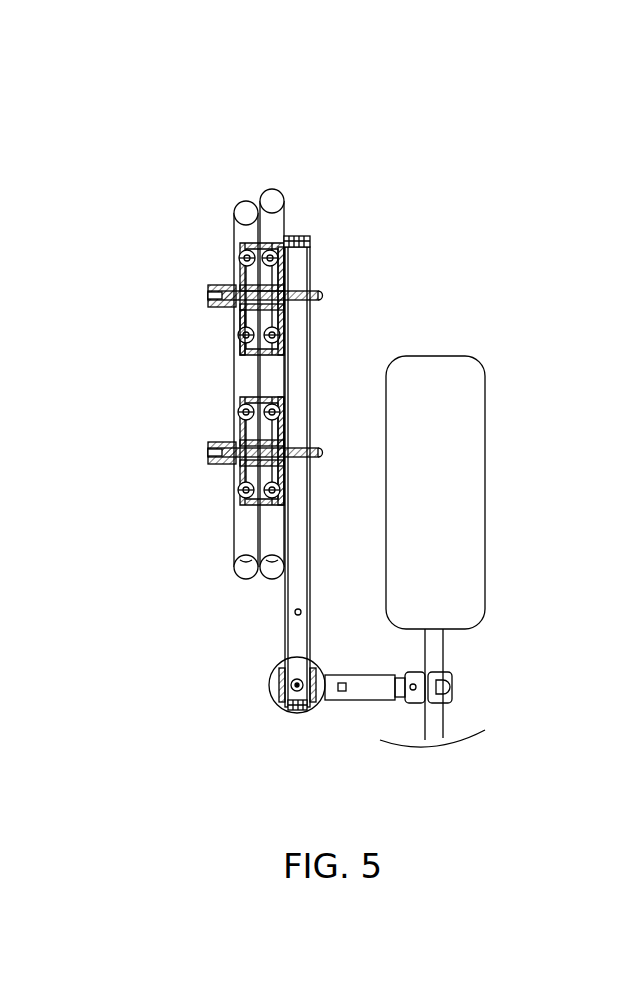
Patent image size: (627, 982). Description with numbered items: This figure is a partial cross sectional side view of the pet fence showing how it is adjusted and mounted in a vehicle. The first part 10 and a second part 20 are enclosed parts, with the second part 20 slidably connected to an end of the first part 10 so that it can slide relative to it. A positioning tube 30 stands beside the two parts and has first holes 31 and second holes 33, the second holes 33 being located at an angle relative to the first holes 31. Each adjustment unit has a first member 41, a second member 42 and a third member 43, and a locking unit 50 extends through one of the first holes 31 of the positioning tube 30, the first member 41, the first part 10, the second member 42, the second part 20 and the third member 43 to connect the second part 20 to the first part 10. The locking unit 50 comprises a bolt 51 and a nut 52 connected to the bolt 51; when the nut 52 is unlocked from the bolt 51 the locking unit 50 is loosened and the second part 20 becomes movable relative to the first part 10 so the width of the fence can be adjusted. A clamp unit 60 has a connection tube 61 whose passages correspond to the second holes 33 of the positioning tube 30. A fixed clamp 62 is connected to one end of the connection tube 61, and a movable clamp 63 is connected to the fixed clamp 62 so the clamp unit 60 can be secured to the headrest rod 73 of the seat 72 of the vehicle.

The first part 10 is at (276, 175).
The second part 20 is at (235, 193).
The positioning tube 30 is at (289, 473).
The first hole 31 is at (305, 290).
The second hole 33 is at (291, 685).
The first member 41 is at (290, 323).
The second member 42 is at (234, 340).
The third member 43 is at (234, 322).
The locking unit 50 is at (190, 321).
The bolt 51 is at (210, 297).
The nut 52 is at (223, 285).
The clamp unit 60 is at (418, 677).
The connection tube 61 is at (367, 692).
The fixed clamp 62 is at (410, 697).
The movable clamp 63 is at (445, 676).
The seat 72 is at (465, 453).
The headrest rod 73 is at (433, 716).